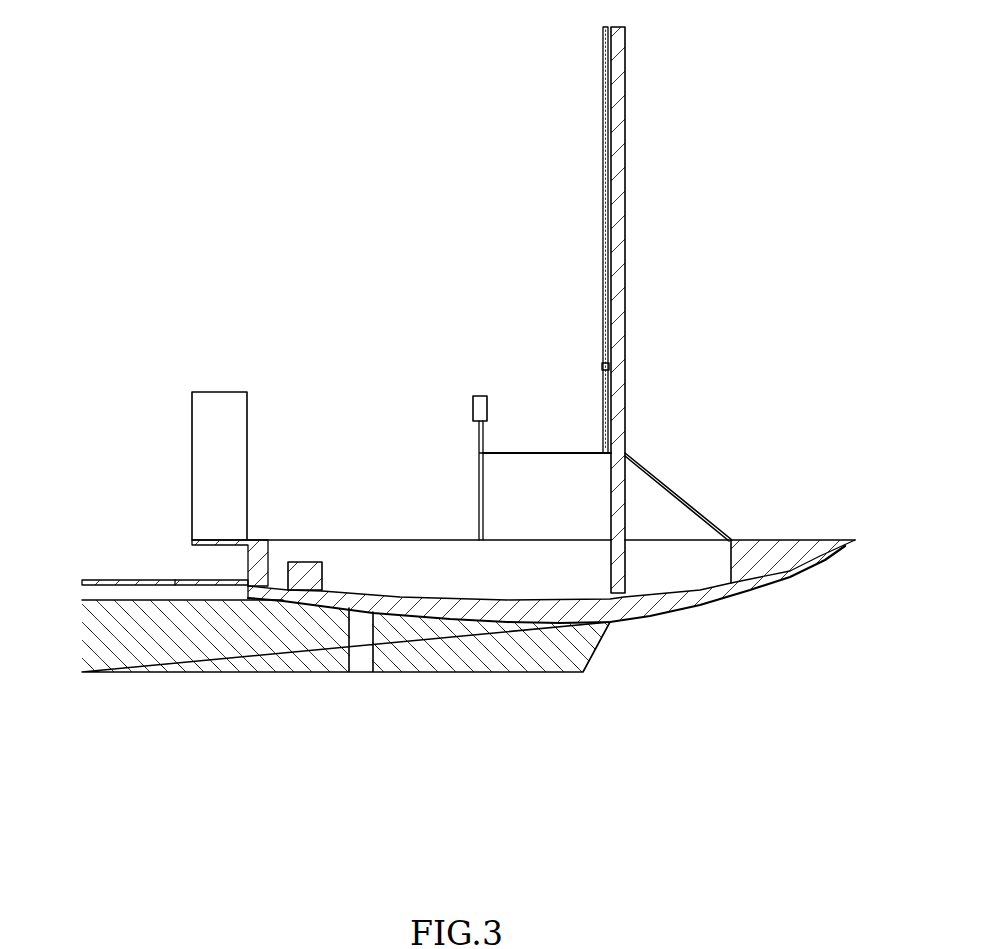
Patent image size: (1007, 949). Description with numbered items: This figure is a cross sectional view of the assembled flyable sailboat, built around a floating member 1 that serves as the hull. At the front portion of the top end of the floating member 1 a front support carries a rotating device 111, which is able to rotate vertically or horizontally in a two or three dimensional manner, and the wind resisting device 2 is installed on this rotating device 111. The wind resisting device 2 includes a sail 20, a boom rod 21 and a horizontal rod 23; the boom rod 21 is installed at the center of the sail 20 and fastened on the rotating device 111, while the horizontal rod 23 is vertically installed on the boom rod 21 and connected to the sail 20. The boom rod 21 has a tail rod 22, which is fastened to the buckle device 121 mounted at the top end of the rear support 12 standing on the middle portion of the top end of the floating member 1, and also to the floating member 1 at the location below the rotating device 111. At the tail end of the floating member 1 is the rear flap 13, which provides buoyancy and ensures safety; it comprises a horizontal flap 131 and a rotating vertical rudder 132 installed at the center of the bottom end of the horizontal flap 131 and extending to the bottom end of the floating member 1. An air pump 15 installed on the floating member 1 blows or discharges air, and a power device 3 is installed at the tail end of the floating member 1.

The floating member 1 is at (750, 488).
The wind resisting device 2 is at (551, 352).
The power device 3 is at (213, 422).
The rear support 12 is at (482, 480).
The rear flap 13 is at (331, 669).
The air pump 15 is at (300, 588).
The sail 20 is at (602, 212).
The boom rod 21 is at (618, 88).
The tail rod 22 is at (626, 595).
The horizontal rod 23 is at (604, 362).
The rotating device 111 is at (626, 367).
The buckle device 121 is at (480, 400).
The horizontal flap 131 is at (130, 580).
The rotating vertical rudder 132 is at (202, 660).